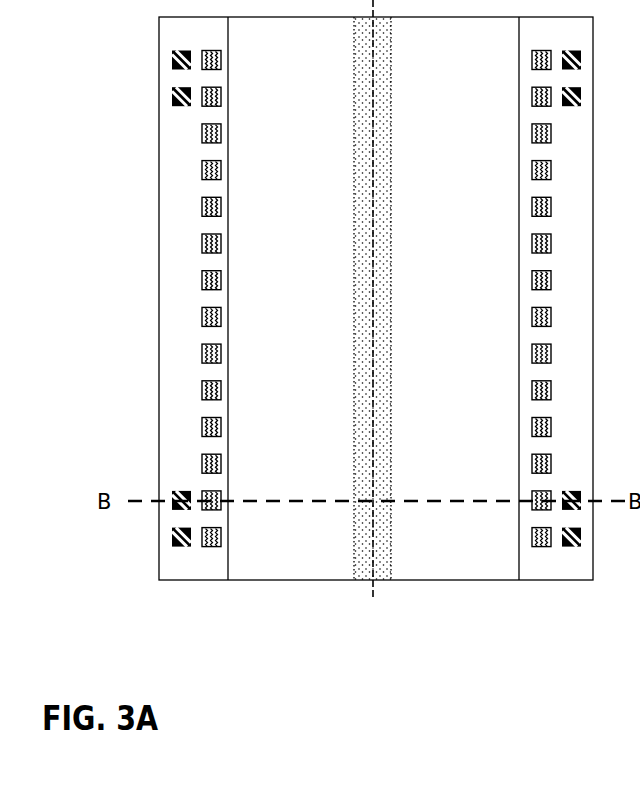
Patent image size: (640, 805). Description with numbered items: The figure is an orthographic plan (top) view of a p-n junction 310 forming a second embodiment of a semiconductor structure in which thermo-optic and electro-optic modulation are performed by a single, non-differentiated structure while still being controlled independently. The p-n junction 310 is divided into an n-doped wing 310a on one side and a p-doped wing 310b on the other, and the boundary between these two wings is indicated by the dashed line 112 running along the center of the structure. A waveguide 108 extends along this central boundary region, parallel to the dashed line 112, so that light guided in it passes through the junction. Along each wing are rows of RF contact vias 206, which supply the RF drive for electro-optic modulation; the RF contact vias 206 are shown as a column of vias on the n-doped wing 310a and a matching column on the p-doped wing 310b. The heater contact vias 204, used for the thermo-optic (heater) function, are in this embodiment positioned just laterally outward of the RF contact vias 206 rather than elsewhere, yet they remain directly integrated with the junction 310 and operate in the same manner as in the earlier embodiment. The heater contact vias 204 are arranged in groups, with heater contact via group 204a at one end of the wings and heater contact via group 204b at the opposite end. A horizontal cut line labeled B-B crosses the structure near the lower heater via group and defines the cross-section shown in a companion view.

The p-n junction 310 is at (77, 316).
The n-doped wing 310a is at (373, 610).
The p-doped wing 310b is at (595, 610).
The waveguide 108 is at (409, 298).
The dashed line 112 is at (325, 299).
The heater contact vias 204 is at (182, 108).
The heater contact via group 204a is at (160, 44).
The heater contact via group 204b is at (160, 485).
The RF contact vias 206 is at (514, 299).